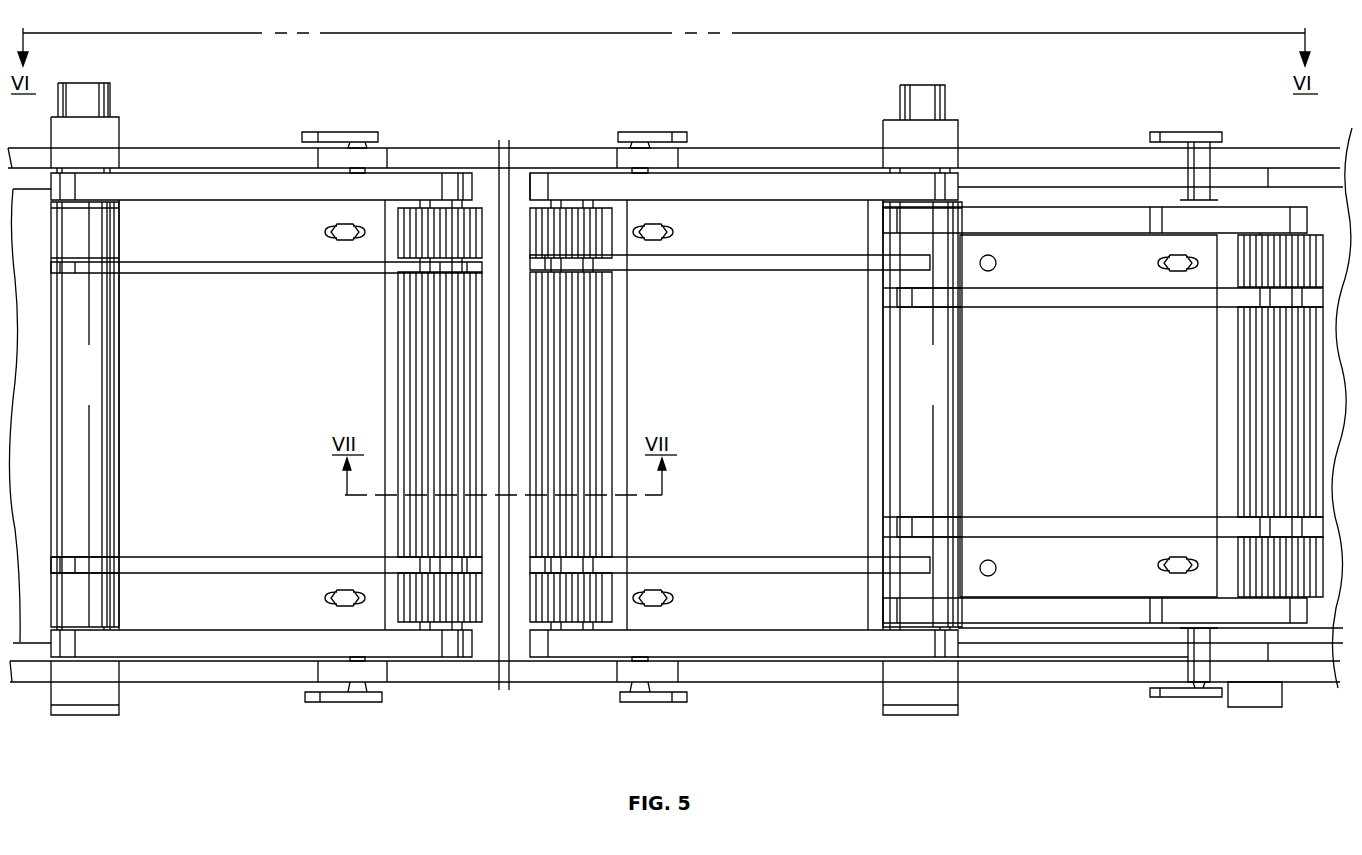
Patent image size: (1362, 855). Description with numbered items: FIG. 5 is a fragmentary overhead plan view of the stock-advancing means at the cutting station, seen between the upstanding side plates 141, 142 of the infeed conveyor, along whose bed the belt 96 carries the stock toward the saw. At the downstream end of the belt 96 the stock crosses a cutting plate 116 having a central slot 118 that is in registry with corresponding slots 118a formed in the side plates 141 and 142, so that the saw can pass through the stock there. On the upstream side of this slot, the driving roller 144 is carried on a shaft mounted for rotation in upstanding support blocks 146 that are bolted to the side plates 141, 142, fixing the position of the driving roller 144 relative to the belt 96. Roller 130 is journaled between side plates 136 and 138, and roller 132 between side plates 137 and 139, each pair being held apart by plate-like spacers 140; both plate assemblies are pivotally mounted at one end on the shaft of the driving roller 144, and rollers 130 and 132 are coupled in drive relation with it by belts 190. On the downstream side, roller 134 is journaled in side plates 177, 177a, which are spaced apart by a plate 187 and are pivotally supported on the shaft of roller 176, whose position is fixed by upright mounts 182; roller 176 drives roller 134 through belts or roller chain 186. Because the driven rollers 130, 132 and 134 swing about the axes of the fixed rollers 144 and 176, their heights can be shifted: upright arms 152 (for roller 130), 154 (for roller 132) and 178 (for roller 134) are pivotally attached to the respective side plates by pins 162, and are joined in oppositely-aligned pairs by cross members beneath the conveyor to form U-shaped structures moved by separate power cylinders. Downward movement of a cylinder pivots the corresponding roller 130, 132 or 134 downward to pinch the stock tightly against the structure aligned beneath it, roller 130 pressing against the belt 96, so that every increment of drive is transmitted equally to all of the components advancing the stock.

The belt 96 is at (1334, 194).
The cutting plate 116 is at (527, 178).
The central slot 118 is at (503, 352).
The slots in side plates 118a is at (503, 150).
The roller 130 is at (1248, 410).
The roller 132 is at (612, 397).
The roller 134 is at (405, 357).
The side plate 136 is at (1063, 610).
The side plate 137 is at (778, 640).
The side plate 138 is at (1057, 222).
The side plate 139 is at (793, 190).
The plate-like spacers 140 is at (803, 410).
The side plate 141 is at (1312, 676).
The side plate 142 is at (1264, 150).
The driving roller 144 is at (939, 398).
The upstanding support blocks 146 is at (936, 152).
The upright arm 152 is at (1180, 135).
The upright arm 154 is at (650, 137).
The pins 162 is at (1212, 184).
The roller 176 is at (101, 380).
The side plate 177 is at (210, 638).
The side plate 177a is at (190, 196).
The upright arm 178 is at (363, 134).
The upright mount 182 is at (101, 152).
The belts or roller chain 186 is at (212, 270).
The plate 187 is at (217, 382).
The belts 190 is at (780, 268).